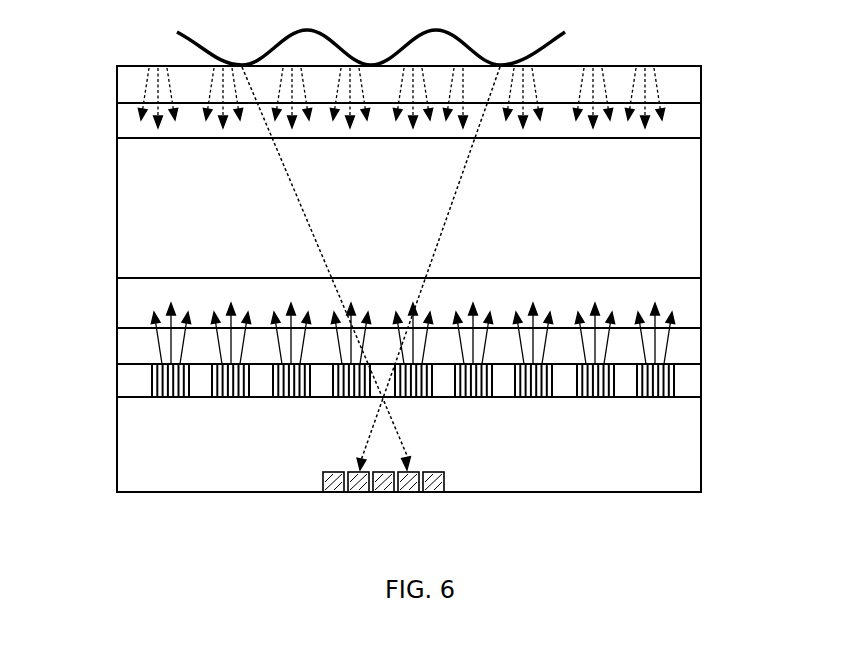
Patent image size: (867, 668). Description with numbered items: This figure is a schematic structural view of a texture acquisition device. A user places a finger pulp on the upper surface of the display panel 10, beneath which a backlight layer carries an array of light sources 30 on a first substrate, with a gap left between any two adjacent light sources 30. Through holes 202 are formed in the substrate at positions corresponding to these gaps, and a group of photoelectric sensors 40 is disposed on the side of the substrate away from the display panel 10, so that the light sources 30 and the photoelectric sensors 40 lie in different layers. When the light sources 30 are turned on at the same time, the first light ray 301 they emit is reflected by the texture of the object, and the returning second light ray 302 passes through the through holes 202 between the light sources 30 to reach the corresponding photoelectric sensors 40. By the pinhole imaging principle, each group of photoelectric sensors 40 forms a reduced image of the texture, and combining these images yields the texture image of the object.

The display panel 10 is at (738, 217).
The light sources 30 is at (413, 407).
The photoelectric sensors 40 is at (362, 493).
The through holes 202 is at (584, 411).
The first light ray 301 is at (158, 347).
The second light ray 302 is at (401, 268).